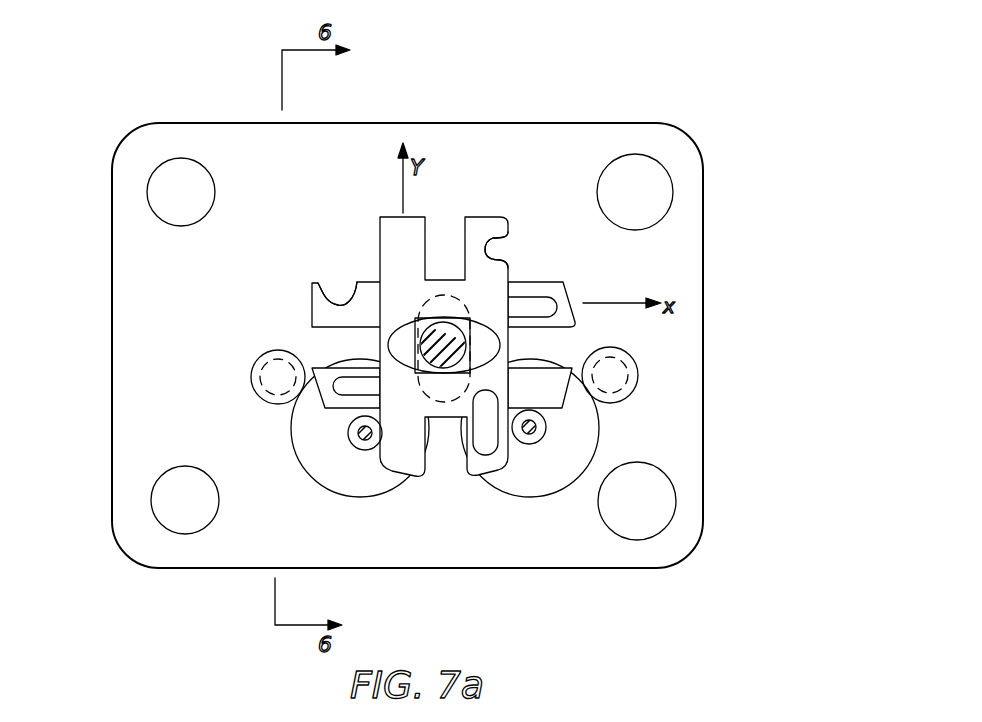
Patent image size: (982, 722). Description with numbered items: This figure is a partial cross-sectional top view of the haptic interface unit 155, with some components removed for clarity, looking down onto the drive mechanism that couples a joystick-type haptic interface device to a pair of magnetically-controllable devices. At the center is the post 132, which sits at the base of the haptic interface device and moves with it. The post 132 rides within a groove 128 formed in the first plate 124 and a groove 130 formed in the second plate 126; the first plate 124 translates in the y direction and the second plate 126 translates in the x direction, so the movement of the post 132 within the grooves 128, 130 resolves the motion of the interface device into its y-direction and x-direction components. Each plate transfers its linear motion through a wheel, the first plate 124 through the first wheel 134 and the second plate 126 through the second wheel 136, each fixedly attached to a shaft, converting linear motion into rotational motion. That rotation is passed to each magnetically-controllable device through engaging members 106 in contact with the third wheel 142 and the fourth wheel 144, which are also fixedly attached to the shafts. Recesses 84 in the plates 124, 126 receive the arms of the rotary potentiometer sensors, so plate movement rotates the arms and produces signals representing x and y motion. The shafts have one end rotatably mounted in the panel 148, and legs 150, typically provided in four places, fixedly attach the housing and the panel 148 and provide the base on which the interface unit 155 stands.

The recess 84 is at (345, 292).
The engaging member 106 is at (251, 377).
The first plate 124 is at (483, 217).
The second plate 126 is at (318, 283).
The groove 128 is at (500, 345).
The groove 130 is at (448, 293).
The post 132 is at (388, 345).
The first wheel 134 is at (355, 452).
The second wheel 136 is at (522, 443).
The third wheel 142 is at (317, 460).
The fourth wheel 144 is at (542, 473).
The panel 148 is at (682, 435).
The leg 150 is at (657, 504).
The haptic interface unit 155 is at (743, 250).